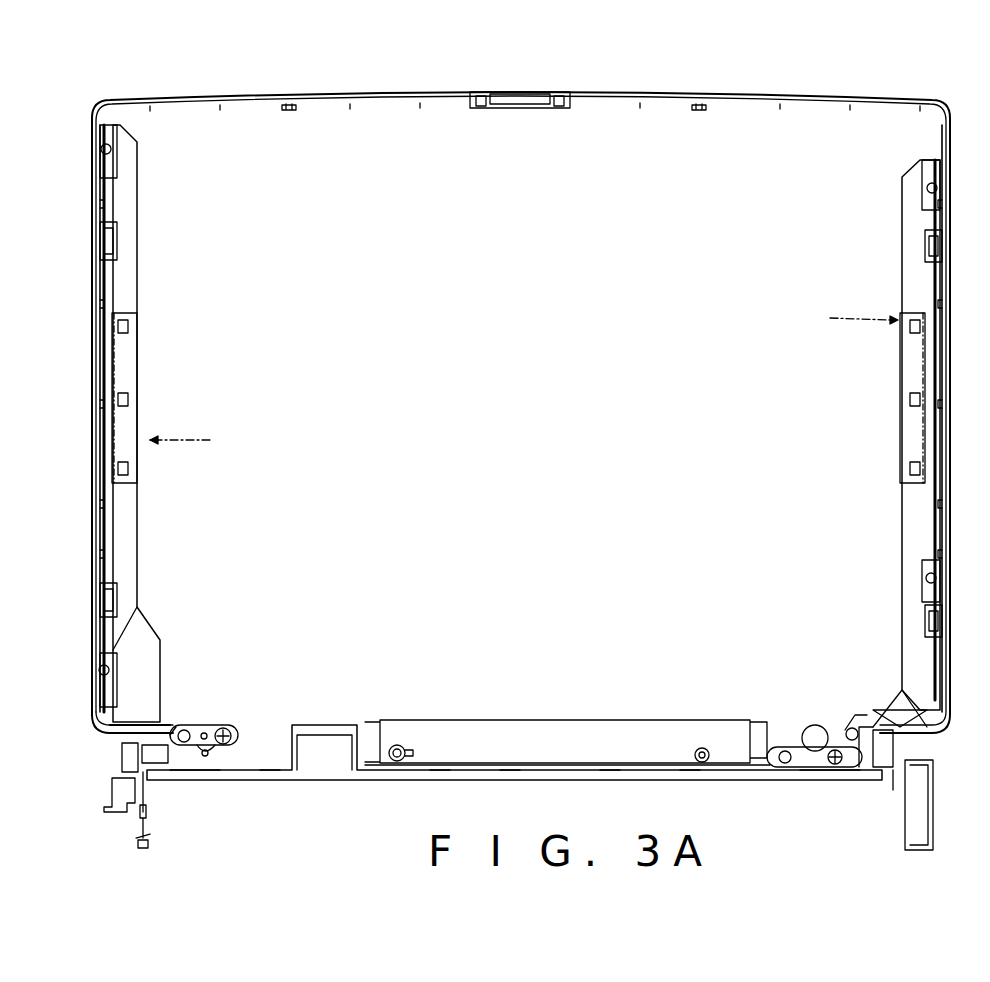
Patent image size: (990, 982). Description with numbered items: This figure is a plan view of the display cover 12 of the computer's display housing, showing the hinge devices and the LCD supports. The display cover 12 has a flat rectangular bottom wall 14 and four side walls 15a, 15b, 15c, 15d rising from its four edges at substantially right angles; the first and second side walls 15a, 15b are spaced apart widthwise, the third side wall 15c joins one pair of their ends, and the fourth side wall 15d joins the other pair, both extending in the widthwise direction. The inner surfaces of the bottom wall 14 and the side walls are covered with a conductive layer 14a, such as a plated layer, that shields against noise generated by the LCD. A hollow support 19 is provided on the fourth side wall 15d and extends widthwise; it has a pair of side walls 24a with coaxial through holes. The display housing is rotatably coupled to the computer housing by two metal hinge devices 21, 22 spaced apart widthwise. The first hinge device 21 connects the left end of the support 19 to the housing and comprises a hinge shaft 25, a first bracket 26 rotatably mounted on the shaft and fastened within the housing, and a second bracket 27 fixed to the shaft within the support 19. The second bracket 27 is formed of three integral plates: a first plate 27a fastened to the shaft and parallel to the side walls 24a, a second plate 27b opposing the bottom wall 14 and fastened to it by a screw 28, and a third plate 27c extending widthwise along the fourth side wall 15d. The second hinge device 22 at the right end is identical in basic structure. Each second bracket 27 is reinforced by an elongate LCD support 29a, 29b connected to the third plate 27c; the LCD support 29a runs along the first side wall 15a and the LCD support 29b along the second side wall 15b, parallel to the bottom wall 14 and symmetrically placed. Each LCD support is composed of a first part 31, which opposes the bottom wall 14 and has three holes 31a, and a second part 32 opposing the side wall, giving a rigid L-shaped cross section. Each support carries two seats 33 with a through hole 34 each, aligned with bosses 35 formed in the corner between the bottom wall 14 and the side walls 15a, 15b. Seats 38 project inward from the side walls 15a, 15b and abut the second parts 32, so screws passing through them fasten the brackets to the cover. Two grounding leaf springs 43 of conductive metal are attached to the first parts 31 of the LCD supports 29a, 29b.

The display cover 12 is at (92, 368).
The bottom wall 14 is at (315, 150).
The conductive layer 14a is at (588, 233).
The first side wall 15a is at (92, 470).
The second side wall 15b is at (948, 360).
The third side wall 15c is at (458, 92).
The fourth side wall 15d is at (118, 733).
The support 19 is at (550, 770).
The first hinge device 21 is at (160, 788).
The second hinge device 22 is at (888, 788).
The side walls of support 24a is at (145, 770).
The hinge shaft 25 is at (150, 758).
The first bracket 26 is at (112, 790).
The second bracket 27 is at (210, 728).
The first plate 27a is at (180, 775).
The second plate 27b is at (183, 740).
The third plate 27c is at (152, 720).
The screw 28 is at (232, 738).
The first LCD support 29a is at (125, 522).
The second LCD support 29b is at (912, 522).
The first part 31 is at (130, 425).
The holes 31a is at (130, 326).
The second part 32 is at (138, 356).
The seats 33 is at (118, 150).
The through hole 34 is at (113, 130).
The bosses 35 is at (928, 180).
The seats 38 is at (100, 240).
The grounding leaf springs 43 is at (524, 376).